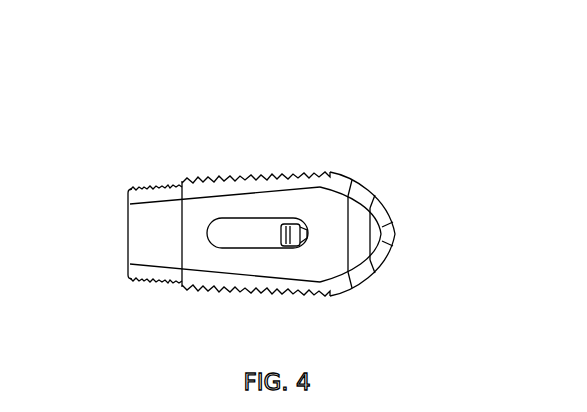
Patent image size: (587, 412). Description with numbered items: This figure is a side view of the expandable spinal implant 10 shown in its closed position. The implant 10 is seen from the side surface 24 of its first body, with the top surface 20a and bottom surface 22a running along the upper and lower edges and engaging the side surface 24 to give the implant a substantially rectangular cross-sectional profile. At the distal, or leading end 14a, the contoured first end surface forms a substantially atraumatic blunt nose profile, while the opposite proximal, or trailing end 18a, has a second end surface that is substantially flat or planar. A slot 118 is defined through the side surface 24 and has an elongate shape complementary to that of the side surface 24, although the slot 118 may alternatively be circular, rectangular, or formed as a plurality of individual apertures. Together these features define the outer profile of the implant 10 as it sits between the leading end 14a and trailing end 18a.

The expandable spinal implant 10 is at (263, 204).
The leading end 14a is at (399, 233).
The trailing end 18a is at (126, 252).
The bottom surface 22a is at (213, 178).
The top surface 20a is at (250, 305).
The side surface 24 is at (320, 267).
The slot 118 is at (225, 235).